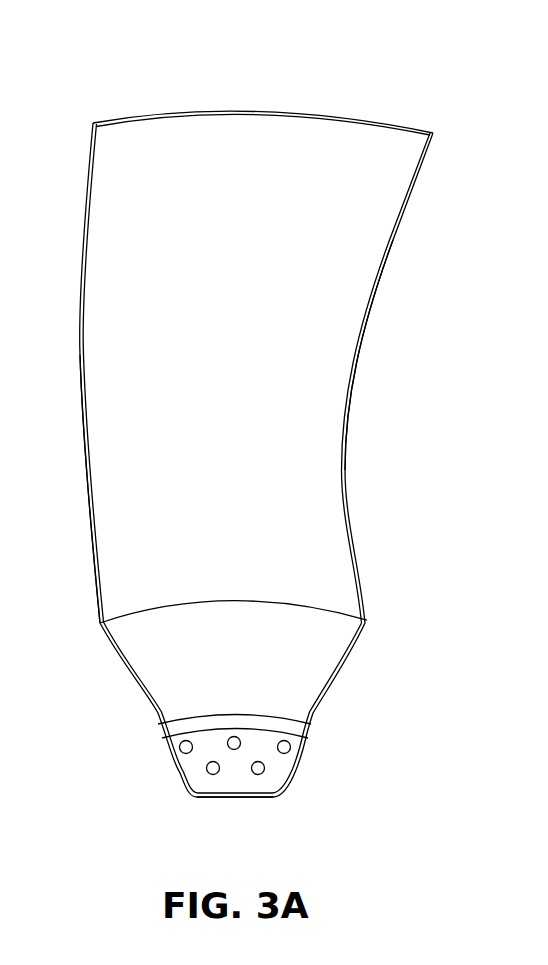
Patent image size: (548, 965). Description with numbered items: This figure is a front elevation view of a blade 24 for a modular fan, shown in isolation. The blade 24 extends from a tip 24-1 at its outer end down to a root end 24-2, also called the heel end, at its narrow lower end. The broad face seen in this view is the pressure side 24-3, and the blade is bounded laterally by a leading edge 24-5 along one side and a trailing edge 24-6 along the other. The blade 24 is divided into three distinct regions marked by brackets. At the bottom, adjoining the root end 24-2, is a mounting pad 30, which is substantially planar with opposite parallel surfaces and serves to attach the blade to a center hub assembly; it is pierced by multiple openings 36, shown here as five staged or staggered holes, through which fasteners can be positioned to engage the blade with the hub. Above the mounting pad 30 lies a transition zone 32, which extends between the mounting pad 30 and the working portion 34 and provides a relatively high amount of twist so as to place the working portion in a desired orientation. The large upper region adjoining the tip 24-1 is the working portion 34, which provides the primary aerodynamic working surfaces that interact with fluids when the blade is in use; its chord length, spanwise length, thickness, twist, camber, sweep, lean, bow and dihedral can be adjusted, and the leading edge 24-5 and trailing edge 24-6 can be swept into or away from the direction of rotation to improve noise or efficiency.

The blade 24 is at (115, 688).
The tip 24-1 is at (222, 108).
The root end 24-2 is at (200, 805).
The pressure side 24-3 is at (132, 230).
The leading edge 24-5 is at (80, 355).
The trailing edge 24-6 is at (353, 392).
The mounting pad 30 is at (337, 724).
The transition zone 32 is at (378, 615).
The working portion 34 is at (440, 133).
The openings 36 is at (178, 749).